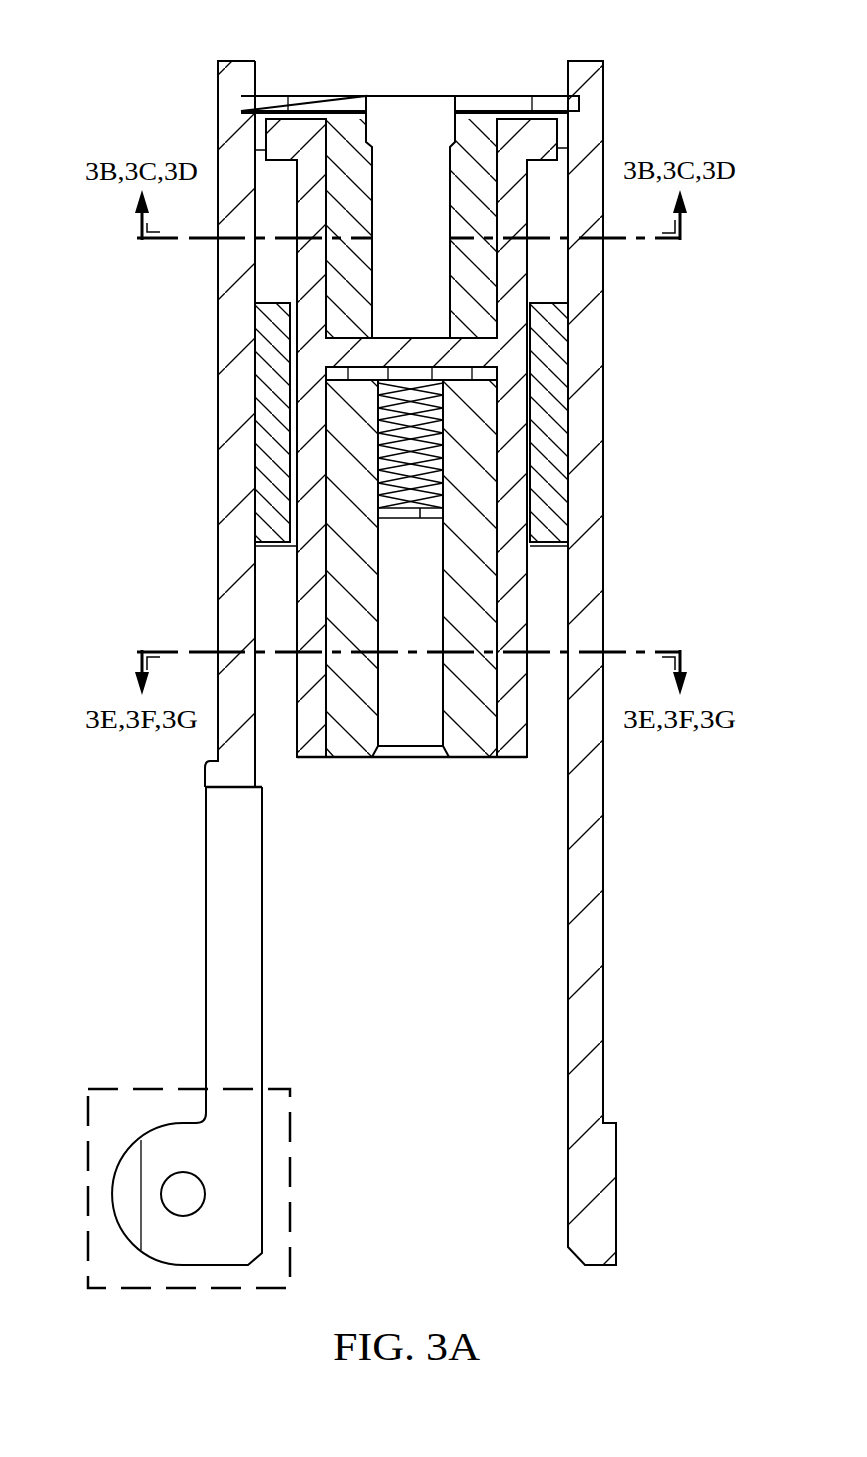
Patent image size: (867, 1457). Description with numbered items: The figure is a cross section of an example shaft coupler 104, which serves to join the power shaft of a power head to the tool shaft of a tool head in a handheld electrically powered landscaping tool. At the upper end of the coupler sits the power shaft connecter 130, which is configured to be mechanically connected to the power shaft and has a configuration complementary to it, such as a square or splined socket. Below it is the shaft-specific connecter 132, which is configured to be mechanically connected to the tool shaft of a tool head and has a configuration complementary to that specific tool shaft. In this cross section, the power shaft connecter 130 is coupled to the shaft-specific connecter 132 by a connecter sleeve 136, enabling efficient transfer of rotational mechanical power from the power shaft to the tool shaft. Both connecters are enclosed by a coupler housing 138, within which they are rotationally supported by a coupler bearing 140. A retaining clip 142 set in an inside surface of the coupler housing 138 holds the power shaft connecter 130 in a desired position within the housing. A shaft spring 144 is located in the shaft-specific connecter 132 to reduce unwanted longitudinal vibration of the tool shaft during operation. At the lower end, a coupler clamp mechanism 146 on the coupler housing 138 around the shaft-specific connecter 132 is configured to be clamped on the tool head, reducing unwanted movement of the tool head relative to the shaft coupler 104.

The shaft coupler 104 is at (112, 60).
The power shaft connecter 130 is at (350, 128).
The shaft-specific connecter 132 is at (347, 748).
The connecter sleeve 136 is at (307, 622).
The coupler housing 138 is at (605, 936).
The coupler bearing 140 is at (262, 370).
The retaining clip 142 is at (515, 96).
The shaft spring 144 is at (422, 516).
The coupler clamp mechanism 146 is at (175, 1288).